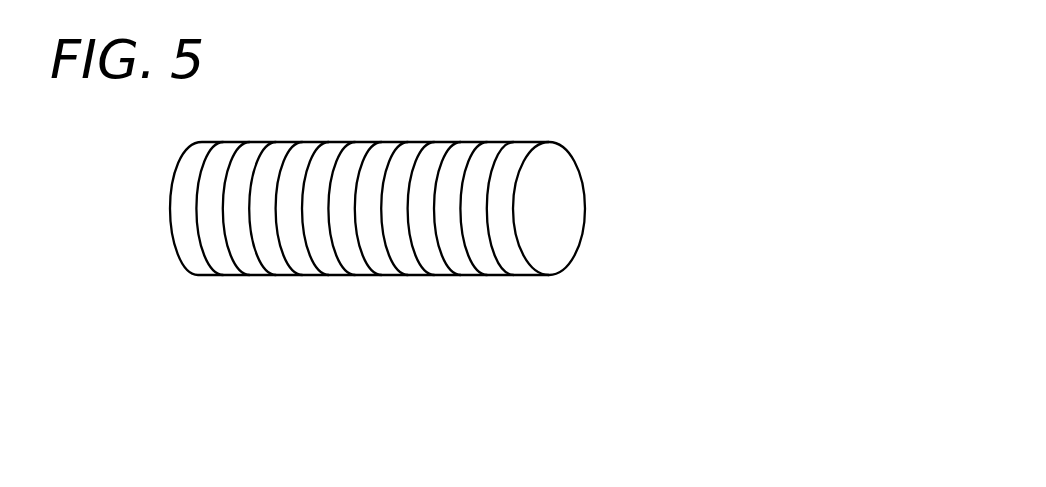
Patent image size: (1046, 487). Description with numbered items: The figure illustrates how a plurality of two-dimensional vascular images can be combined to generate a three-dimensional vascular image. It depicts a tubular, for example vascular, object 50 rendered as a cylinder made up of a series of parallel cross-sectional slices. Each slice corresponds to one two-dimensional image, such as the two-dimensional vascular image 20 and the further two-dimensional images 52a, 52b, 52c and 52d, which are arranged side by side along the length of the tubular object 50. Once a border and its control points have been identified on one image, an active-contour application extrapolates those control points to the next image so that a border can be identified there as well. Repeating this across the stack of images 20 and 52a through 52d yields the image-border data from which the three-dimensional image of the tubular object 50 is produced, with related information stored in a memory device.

The 2D vascular image 20 is at (350, 132).
The tubular object 50 is at (596, 207).
The 2D image 52a is at (455, 135).
The 2D image 52b is at (428, 284).
The 2D image 52c is at (404, 135).
The 2D image 52d is at (377, 284).